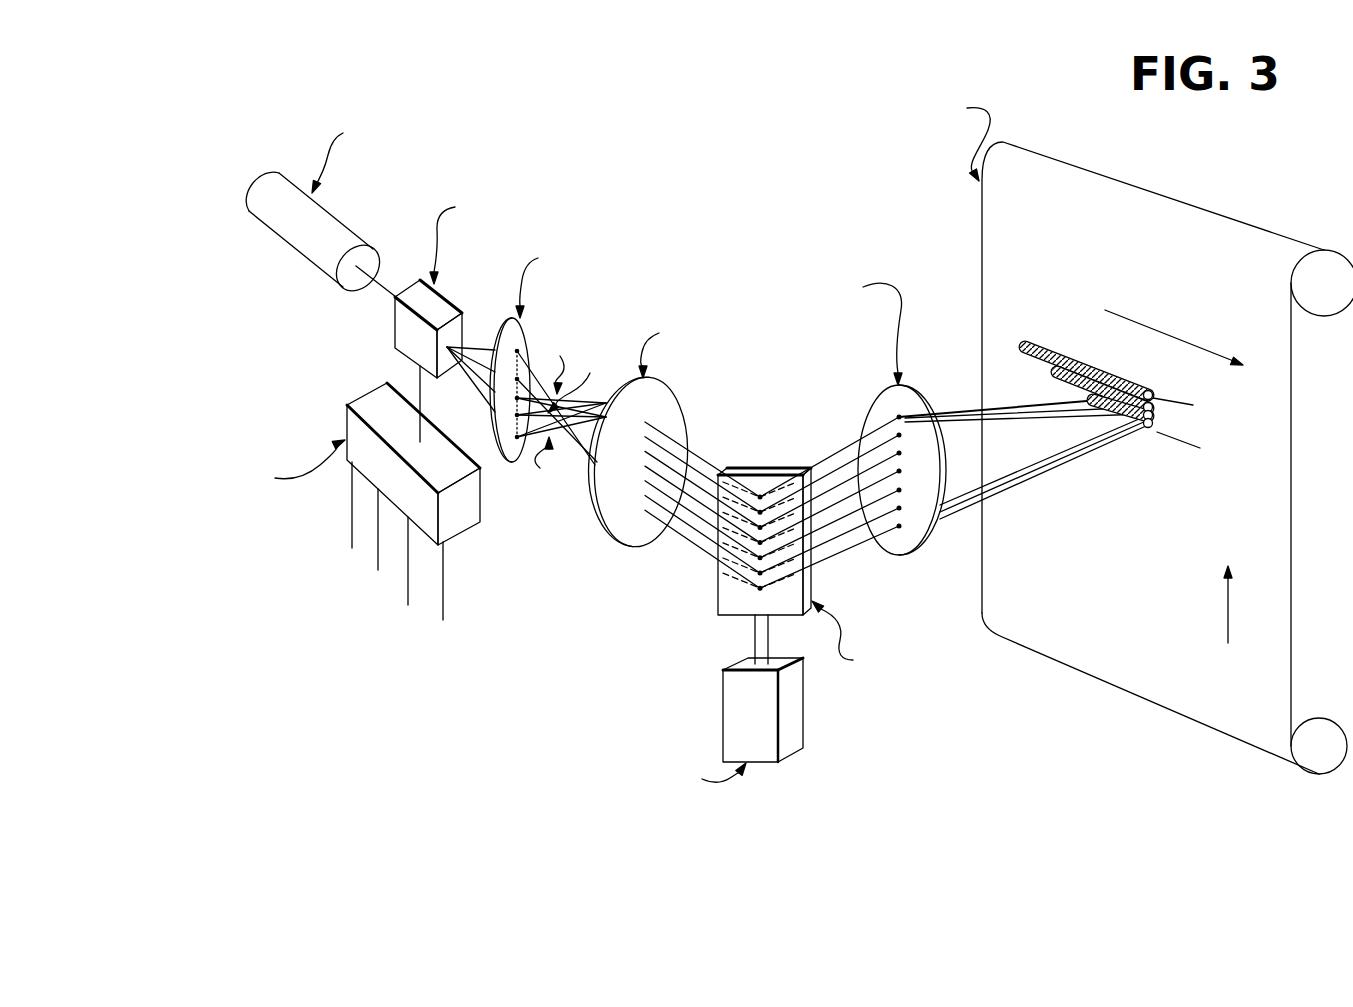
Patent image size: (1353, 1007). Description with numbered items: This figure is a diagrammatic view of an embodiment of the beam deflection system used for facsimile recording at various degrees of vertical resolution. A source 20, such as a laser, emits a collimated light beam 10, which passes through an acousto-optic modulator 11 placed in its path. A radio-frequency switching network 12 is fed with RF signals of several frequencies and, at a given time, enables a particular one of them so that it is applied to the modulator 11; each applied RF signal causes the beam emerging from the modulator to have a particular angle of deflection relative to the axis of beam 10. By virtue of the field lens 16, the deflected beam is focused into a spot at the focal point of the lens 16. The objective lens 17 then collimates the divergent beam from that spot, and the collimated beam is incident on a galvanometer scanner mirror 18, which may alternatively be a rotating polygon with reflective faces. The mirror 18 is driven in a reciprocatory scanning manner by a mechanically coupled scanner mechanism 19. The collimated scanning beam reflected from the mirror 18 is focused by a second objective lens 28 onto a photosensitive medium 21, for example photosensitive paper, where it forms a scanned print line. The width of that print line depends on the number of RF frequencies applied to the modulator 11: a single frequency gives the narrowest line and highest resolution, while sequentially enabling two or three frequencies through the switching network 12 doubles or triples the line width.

The collimated light beam 10 is at (382, 280).
The acousto-optic modulator 11 is at (412, 328).
The radio-frequency switching network 12 is at (350, 425).
The field lens 16 is at (500, 318).
The objective lens 17 is at (625, 378).
The galvanometer scanner mirror 18 is at (776, 481).
The scanner mechanism 19 is at (797, 735).
The source of collimated light beam 20 is at (340, 222).
The photosensitive medium 21 is at (986, 231).
The objective lens B 28 is at (908, 385).